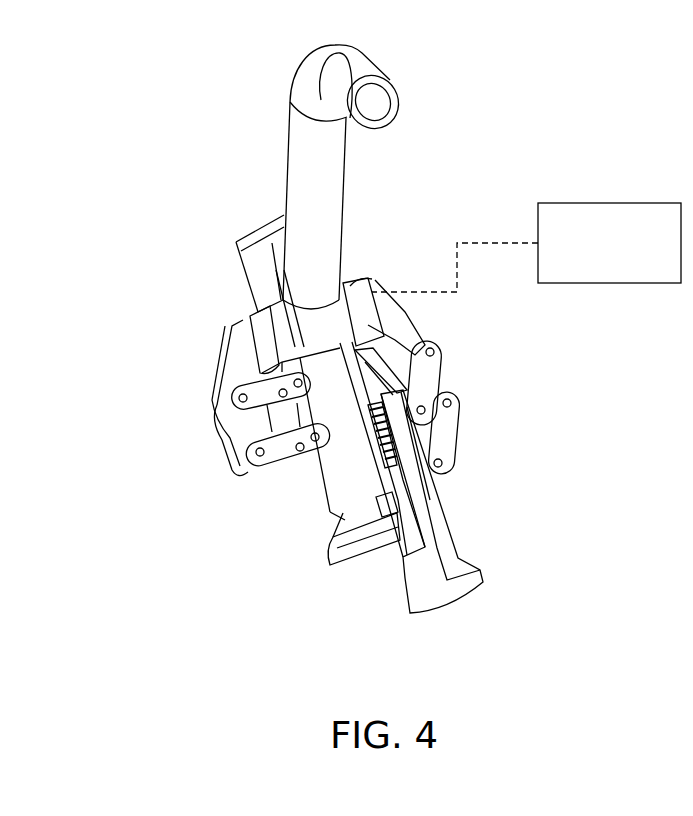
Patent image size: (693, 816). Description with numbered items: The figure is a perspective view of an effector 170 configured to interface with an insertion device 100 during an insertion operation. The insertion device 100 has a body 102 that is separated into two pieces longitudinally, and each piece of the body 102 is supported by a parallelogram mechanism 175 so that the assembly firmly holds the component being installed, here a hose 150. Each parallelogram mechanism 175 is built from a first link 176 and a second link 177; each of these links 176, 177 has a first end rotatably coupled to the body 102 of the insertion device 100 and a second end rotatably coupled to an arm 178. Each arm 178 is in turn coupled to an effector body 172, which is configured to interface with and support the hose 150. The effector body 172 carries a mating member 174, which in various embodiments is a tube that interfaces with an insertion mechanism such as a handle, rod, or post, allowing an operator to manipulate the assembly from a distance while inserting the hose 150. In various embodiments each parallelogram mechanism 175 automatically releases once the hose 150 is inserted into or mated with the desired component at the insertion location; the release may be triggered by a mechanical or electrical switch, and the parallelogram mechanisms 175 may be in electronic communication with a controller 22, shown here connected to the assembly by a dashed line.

The controller 22 is at (622, 260).
The insertion device 100 is at (300, 522).
The body 102 is at (348, 518).
The hose 150 is at (322, 172).
The effector 170 is at (462, 203).
The effector body 172 is at (262, 318).
The mating member 174 is at (262, 241).
The parallelogram mechanism 175 is at (180, 441).
The first link 176 is at (262, 385).
The second link 177 is at (284, 452).
The arm 178 is at (243, 422).